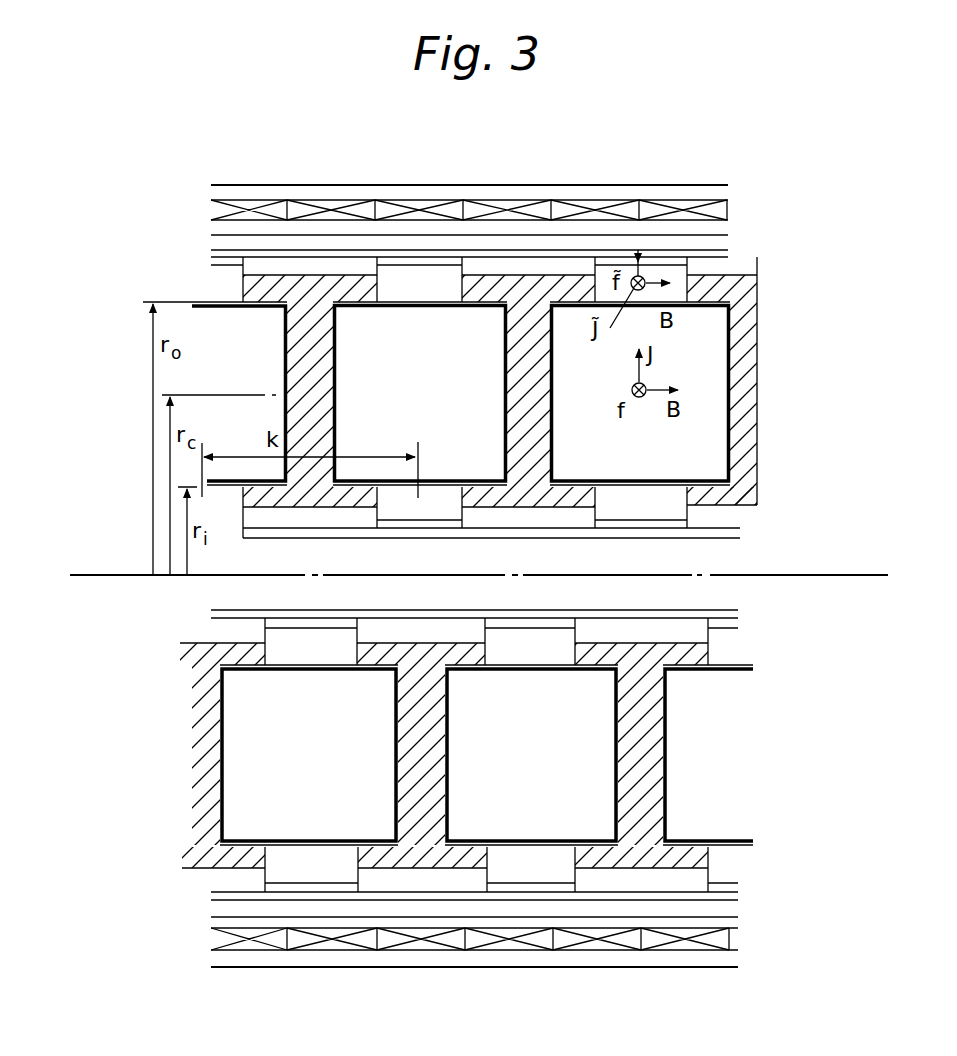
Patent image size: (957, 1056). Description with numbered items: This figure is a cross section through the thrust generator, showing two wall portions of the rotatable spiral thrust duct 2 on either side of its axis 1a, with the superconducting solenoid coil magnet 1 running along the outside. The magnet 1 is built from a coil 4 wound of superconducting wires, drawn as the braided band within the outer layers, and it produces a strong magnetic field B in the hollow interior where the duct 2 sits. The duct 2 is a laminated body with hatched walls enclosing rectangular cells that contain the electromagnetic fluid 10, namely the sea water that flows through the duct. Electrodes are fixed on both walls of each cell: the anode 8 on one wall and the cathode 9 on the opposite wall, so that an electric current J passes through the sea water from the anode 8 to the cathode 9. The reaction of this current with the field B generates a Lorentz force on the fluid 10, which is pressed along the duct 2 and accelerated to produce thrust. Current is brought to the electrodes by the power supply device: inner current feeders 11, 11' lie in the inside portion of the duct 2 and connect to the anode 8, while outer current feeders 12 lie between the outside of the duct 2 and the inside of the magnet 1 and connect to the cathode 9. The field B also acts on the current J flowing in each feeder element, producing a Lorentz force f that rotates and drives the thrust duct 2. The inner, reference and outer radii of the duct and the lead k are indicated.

The superconducting solenoid coil magnet 1 is at (498, 185).
The axis of rotation 1a is at (842, 575).
The rotatable spiral thrust duct 2 is at (748, 372).
The coil 4 is at (538, 208).
The anode 8 is at (705, 477).
The cathode 9 is at (703, 306).
The electromagnetic fluid 10 is at (588, 405).
The inner current feeders 11 is at (597, 528).
The conductor layer 11' is at (463, 618).
The outer current feeders 12 is at (678, 272).